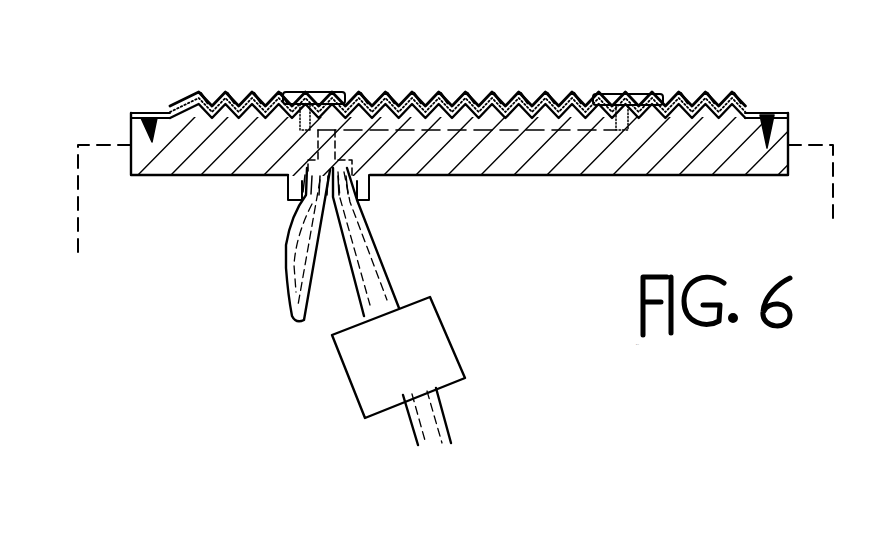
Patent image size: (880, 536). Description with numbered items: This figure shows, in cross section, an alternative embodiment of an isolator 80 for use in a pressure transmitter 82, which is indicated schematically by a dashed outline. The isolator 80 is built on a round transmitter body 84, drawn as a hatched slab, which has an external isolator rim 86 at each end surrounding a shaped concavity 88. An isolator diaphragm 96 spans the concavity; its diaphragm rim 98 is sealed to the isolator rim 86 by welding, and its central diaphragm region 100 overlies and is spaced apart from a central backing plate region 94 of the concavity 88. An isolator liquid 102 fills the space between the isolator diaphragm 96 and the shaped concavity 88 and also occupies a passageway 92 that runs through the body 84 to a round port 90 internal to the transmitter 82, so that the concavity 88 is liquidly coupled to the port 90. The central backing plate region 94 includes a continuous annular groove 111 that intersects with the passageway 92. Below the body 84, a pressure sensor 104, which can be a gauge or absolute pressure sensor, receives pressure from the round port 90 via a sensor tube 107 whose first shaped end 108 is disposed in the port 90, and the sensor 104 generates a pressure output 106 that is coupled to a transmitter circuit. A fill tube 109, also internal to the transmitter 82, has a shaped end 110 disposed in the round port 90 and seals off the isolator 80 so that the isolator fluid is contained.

The isolator 80 is at (437, 227).
The pressure transmitter 82 is at (78, 230).
The transmitter body 84 is at (133, 166).
The isolator rim 86 is at (164, 117).
The shaped concavity 88 is at (245, 100).
The round port 90 is at (372, 190).
The passageway 92 is at (314, 150).
The central backing plate region 94 is at (621, 81).
The isolator diaphragm 96 is at (330, 100).
The diaphragm rim 98 is at (780, 115).
The central diaphragm region 100 is at (553, 97).
The isolator liquid 102 is at (310, 94).
The pressure sensor 104 is at (408, 360).
The pressure output 106 is at (438, 408).
The sensor tube 107 is at (396, 298).
The first shaped end 108 is at (368, 213).
The fill tube 109 is at (287, 262).
The shaped end 110 is at (293, 208).
The continuous annular groove 111 is at (628, 133).